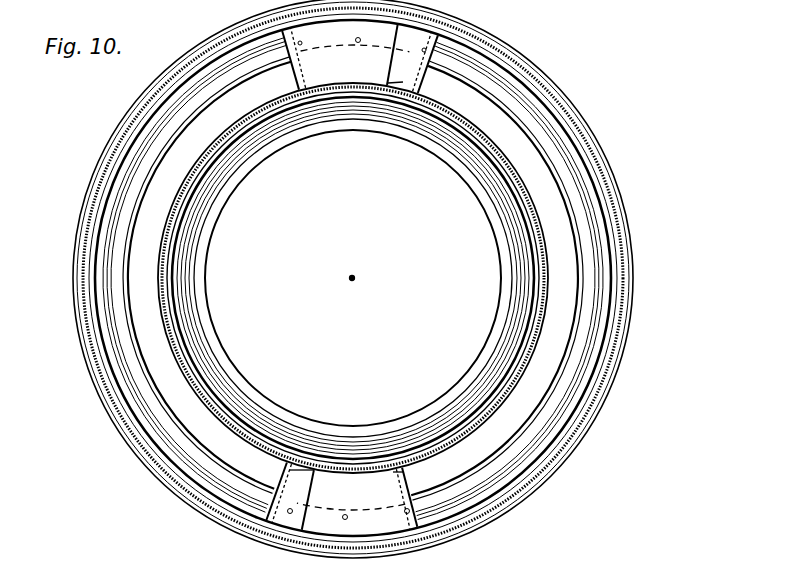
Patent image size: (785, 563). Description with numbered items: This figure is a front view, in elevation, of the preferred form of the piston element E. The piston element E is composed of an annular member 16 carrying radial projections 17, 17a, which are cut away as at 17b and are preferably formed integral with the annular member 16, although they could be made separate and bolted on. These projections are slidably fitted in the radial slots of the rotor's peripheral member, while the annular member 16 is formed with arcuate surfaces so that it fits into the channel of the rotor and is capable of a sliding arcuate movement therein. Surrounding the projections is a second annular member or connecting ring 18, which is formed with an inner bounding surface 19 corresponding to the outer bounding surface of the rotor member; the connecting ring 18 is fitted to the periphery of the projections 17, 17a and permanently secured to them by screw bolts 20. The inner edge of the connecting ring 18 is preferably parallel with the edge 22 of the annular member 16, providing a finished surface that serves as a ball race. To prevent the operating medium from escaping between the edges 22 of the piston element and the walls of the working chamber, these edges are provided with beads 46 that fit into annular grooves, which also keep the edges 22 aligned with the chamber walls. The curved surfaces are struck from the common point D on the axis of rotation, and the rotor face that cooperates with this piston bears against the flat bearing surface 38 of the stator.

The annular member 16 is at (193, 232).
The radial projection 17 is at (346, 75).
The radial projection 17a is at (368, 480).
The cut away portion 17b is at (402, 75).
The connecting ring 18 is at (632, 300).
The inner bounding surface 19 is at (599, 267).
The screw bolt 20 is at (110, 201).
The edge 22 is at (98, 296).
The flat bearing surface 38 is at (292, 60).
The bead 46 is at (95, 352).
The common point D is at (354, 276).
The piston element E is at (495, 203).